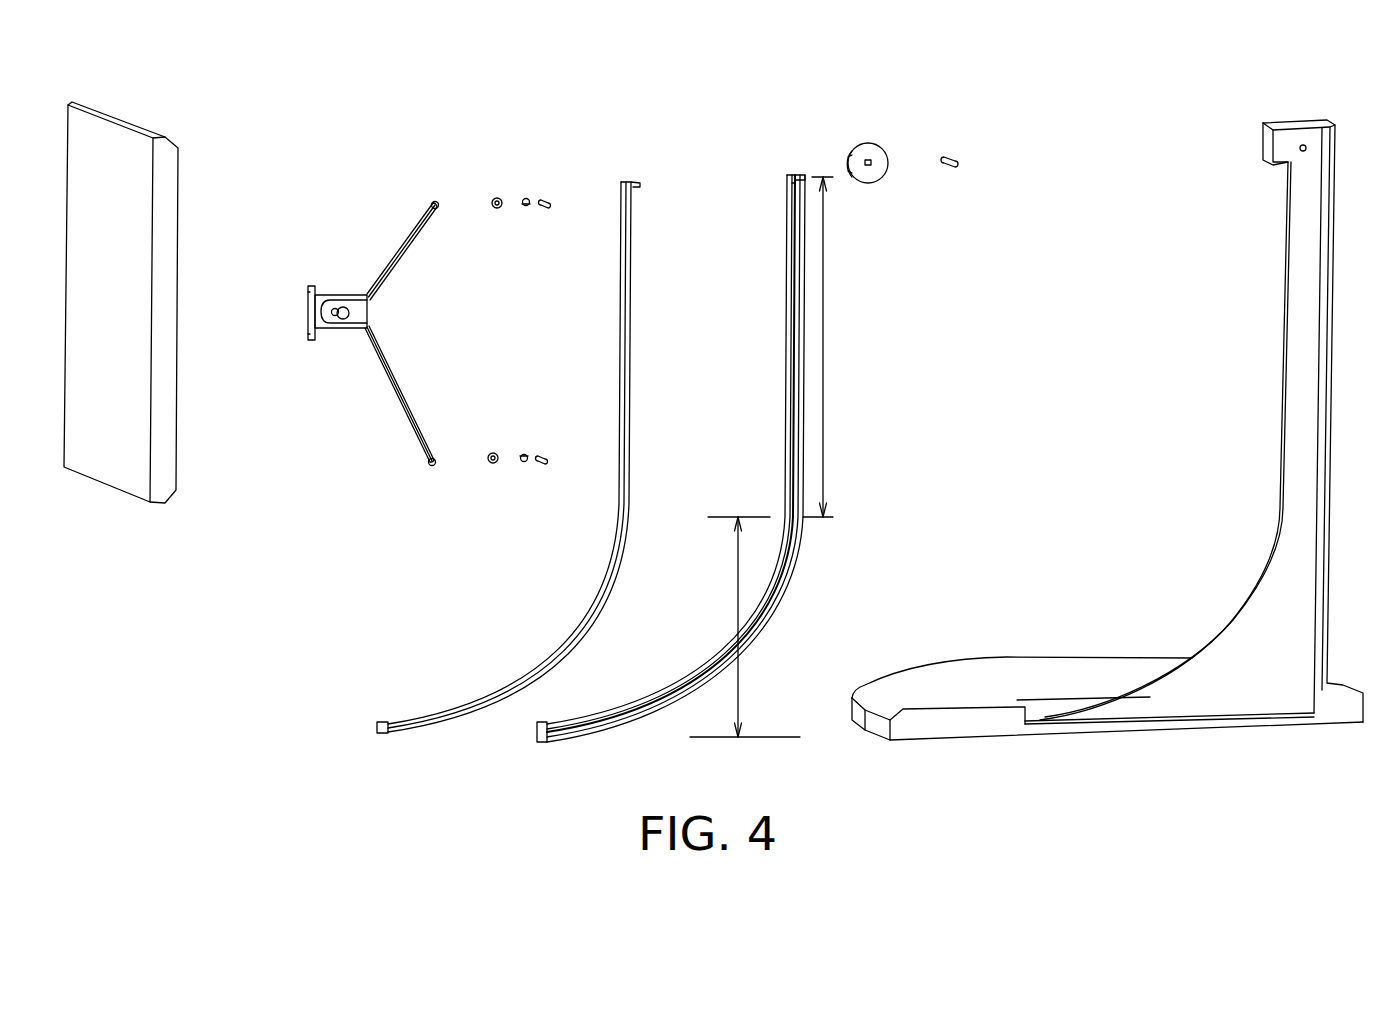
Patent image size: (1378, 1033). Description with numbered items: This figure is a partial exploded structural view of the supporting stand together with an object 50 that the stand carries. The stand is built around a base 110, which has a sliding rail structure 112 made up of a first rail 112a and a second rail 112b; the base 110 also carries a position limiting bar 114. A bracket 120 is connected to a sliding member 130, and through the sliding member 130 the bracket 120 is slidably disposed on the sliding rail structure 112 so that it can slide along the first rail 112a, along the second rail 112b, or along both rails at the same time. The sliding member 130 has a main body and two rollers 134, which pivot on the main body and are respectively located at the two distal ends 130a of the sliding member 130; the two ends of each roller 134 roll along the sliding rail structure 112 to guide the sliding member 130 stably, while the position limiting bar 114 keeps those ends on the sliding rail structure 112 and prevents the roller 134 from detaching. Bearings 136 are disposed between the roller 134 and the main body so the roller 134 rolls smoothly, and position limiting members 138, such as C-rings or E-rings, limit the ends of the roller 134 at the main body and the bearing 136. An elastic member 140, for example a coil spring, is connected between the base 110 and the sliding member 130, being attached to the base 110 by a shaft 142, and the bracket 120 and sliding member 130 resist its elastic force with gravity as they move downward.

The display 50 is at (112, 130).
The base 110 is at (1292, 572).
The sliding rail structure 112 is at (965, 447).
The first rail 112a is at (812, 420).
The second rail 112b is at (738, 595).
The position limiting bar 114 is at (632, 180).
The bracket 120 is at (308, 307).
The sliding member 130 is at (358, 310).
The distal ends 130a is at (425, 188).
The roller 134 is at (547, 209).
The bearing 136 is at (497, 208).
The position limiting member 138 is at (526, 207).
The elastic member 140 is at (865, 150).
The shaft 142 is at (952, 155).